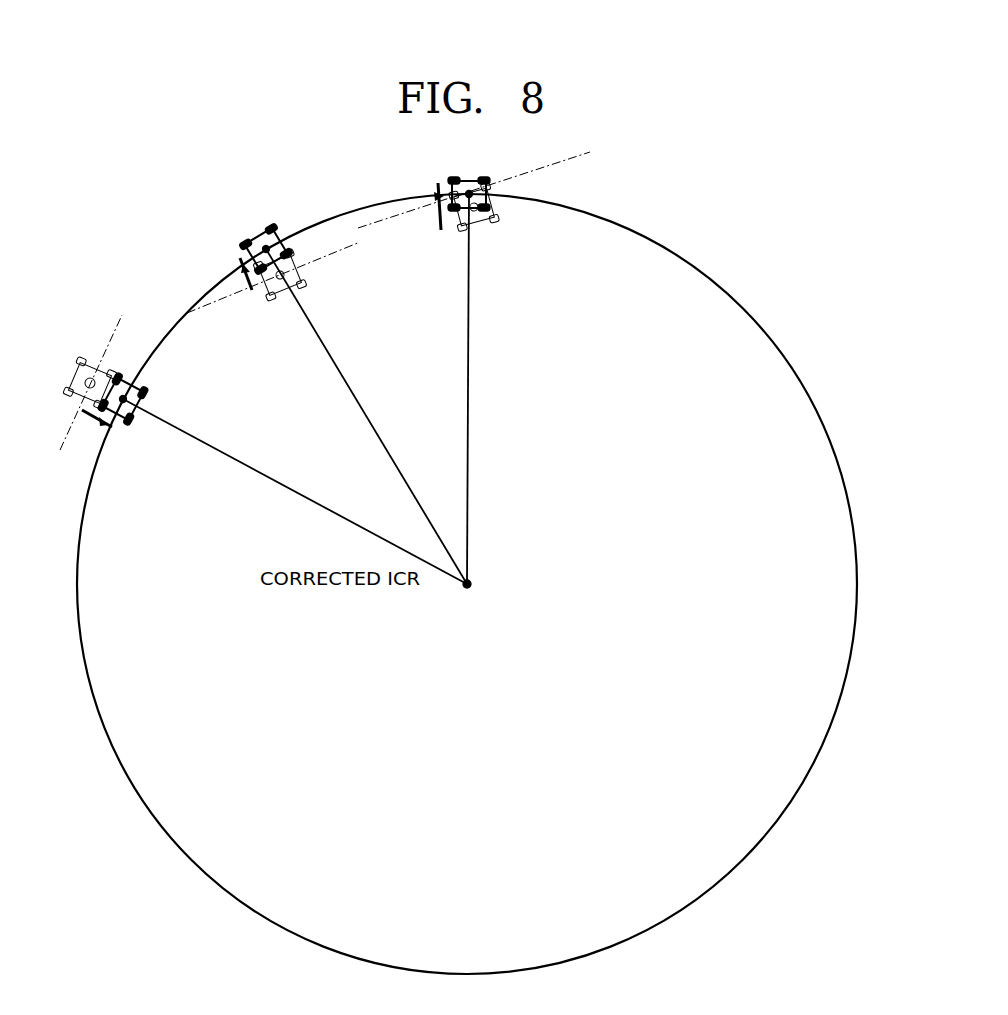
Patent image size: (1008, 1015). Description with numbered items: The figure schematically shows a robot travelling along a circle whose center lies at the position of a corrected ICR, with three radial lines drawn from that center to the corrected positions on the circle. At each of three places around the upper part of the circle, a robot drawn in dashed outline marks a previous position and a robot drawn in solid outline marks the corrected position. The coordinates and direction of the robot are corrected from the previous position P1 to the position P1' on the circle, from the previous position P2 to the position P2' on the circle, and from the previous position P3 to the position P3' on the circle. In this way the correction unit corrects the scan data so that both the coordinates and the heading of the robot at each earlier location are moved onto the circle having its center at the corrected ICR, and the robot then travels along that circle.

The previous position P1 is at (91, 382).
The position P1' is at (129, 399).
The previous position P2 is at (273, 281).
The position P2' is at (260, 254).
The previous position P3 is at (474, 199).
The position P3' is at (466, 192).